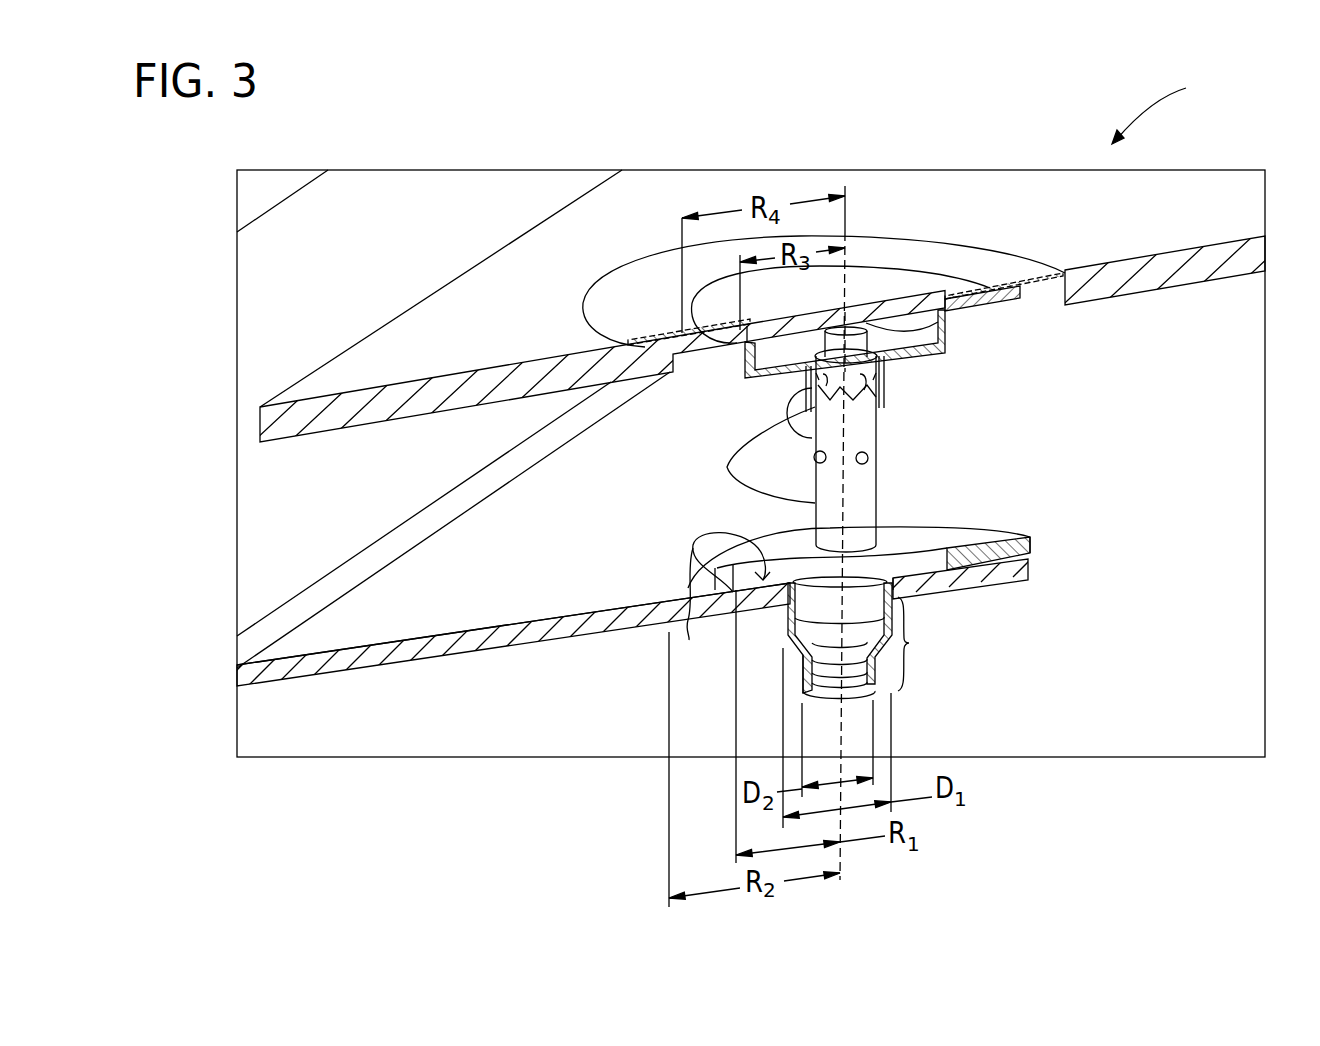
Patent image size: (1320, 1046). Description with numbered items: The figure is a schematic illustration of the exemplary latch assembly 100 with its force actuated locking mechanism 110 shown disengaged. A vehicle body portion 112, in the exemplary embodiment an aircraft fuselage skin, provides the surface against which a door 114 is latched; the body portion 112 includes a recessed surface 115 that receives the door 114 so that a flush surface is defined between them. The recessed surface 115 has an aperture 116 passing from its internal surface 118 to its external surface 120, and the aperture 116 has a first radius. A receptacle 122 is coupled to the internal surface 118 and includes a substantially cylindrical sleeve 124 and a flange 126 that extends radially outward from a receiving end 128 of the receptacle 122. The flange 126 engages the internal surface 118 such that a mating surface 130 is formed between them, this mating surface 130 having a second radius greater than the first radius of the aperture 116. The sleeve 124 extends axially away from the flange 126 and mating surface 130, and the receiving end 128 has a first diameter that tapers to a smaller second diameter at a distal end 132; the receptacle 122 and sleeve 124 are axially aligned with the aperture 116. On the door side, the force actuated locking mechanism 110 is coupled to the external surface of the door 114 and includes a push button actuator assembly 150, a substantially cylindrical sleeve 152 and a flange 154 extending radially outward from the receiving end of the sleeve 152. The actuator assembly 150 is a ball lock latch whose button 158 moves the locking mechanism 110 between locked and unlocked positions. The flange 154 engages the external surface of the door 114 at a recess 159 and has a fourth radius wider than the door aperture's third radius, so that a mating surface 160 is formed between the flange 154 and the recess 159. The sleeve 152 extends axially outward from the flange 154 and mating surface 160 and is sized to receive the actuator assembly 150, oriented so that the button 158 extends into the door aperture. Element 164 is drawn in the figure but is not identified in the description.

The latch assembly 100 is at (1175, 105).
The force actuated locking mechanism 110 is at (1058, 392).
The vehicle body portion 112 is at (388, 186).
The door 114 is at (629, 188).
The recessed surface 115 is at (333, 628).
The aperture 116 is at (781, 508).
The internal surface 118 is at (622, 628).
The external surface 120 is at (567, 614).
The receptacle 122 is at (773, 628).
The sleeve 124 is at (927, 644).
The flange 126 is at (965, 581).
The receiving end 128 is at (930, 590).
The mating surface 130 is at (1032, 550).
The distal end 132 is at (857, 684).
The push button actuator assembly 150 is at (897, 418).
The sleeve 152 is at (870, 455).
The flange 154 is at (960, 310).
The button 158 is at (845, 372).
The recess 159 is at (1022, 291).
The mating surface 160 is at (977, 303).
The dome cover 164 is at (597, 320).